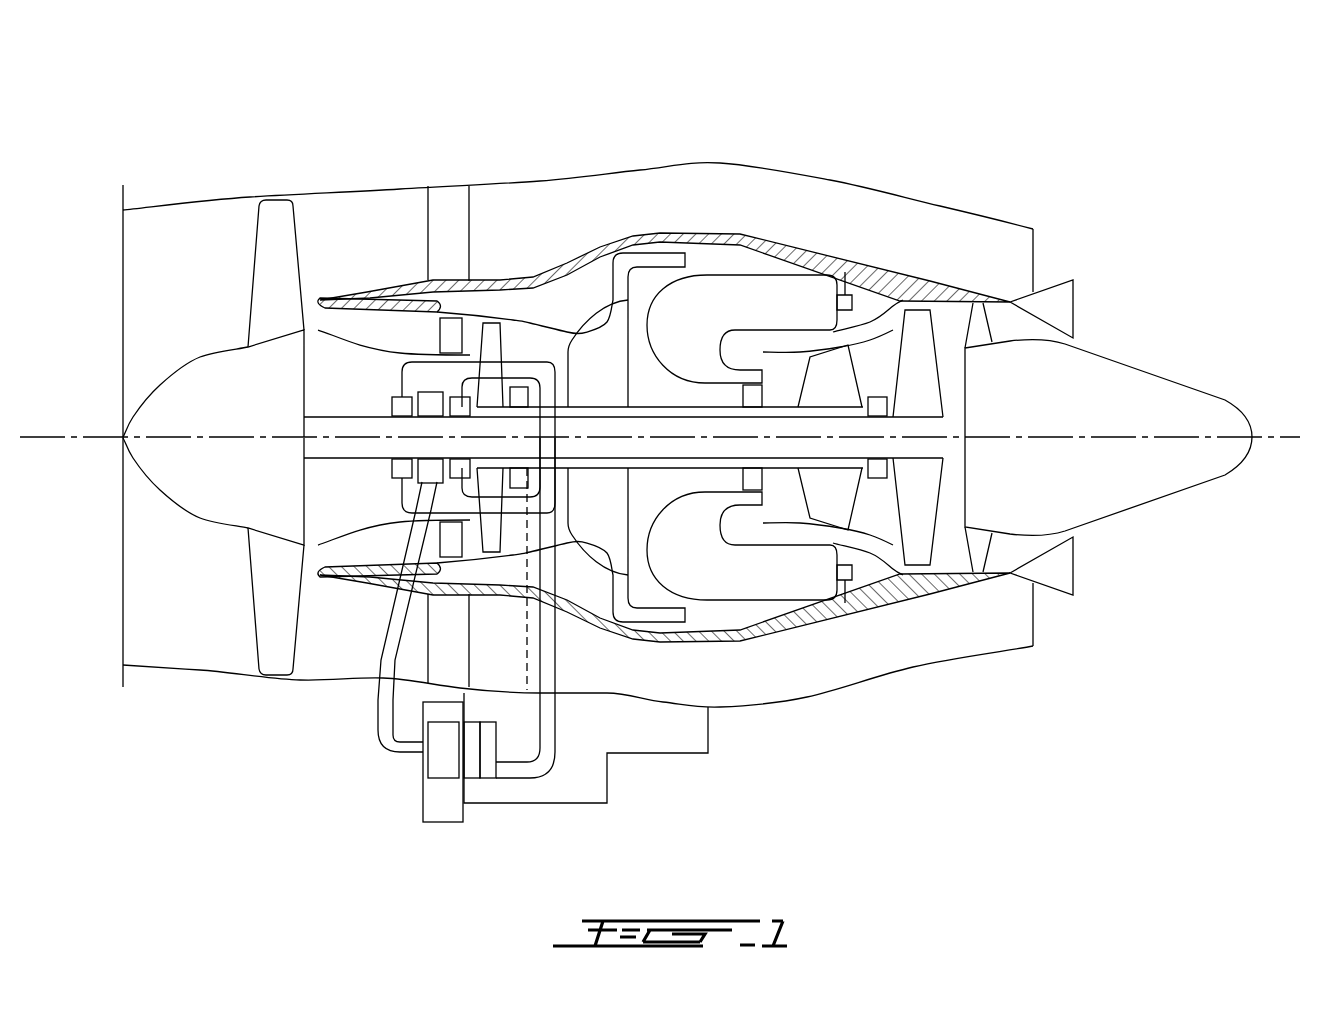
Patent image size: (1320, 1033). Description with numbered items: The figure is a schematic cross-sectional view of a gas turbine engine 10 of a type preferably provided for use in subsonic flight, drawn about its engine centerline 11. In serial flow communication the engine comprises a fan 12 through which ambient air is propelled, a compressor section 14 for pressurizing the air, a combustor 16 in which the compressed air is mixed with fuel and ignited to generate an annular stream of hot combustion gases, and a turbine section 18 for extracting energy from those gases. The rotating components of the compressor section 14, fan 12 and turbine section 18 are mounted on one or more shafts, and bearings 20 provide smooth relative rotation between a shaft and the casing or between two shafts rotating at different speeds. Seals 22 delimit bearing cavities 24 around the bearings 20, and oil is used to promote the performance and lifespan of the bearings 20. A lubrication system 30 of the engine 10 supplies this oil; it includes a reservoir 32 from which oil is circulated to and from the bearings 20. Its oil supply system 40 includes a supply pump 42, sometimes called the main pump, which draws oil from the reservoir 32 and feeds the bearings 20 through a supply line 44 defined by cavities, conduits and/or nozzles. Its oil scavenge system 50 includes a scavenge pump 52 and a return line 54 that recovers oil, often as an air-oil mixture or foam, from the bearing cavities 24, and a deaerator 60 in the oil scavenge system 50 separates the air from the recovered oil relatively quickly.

The gas turbine engine 10 is at (888, 126).
The engine centerline axis 11 is at (1284, 437).
The fan 12 is at (278, 595).
The compressor section 14 is at (530, 337).
The combustor 16 is at (743, 293).
The turbine section 18 is at (877, 500).
The bearings 20 is at (432, 392).
The seals 22 is at (395, 397).
The bearing cavities 24 is at (462, 357).
The lubrication system 30 is at (417, 857).
The reservoir 32 is at (437, 805).
The oil supply system 40 is at (343, 812).
The supply pump 42 is at (437, 762).
The supply line 44 is at (378, 725).
The oil scavenge system 50 is at (583, 855).
The scavenge pump 52 is at (470, 768).
The return line 54 is at (543, 775).
The deaerator 60 is at (488, 767).